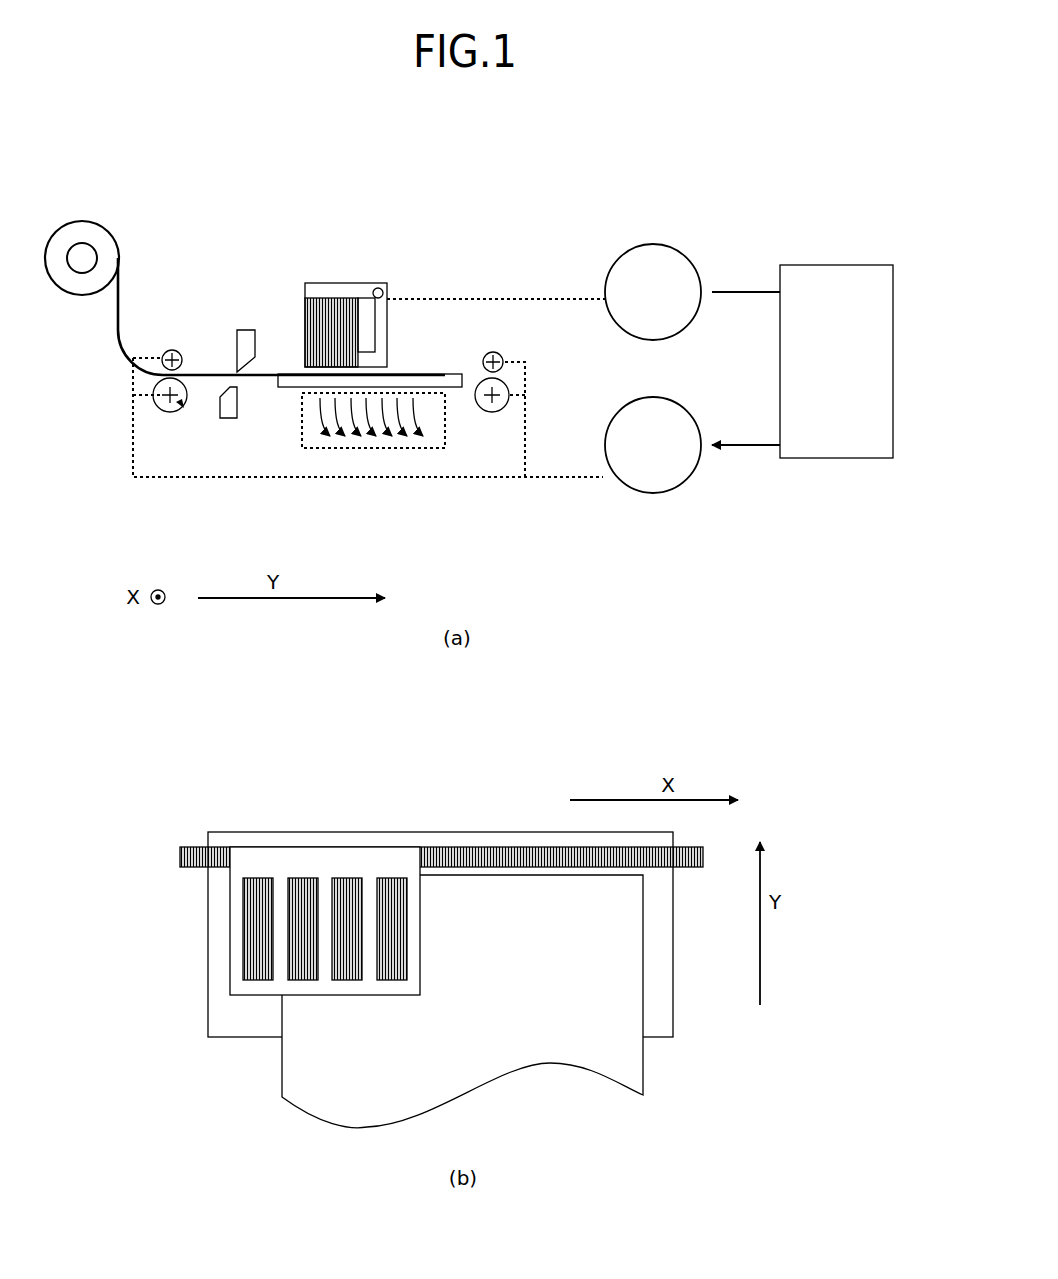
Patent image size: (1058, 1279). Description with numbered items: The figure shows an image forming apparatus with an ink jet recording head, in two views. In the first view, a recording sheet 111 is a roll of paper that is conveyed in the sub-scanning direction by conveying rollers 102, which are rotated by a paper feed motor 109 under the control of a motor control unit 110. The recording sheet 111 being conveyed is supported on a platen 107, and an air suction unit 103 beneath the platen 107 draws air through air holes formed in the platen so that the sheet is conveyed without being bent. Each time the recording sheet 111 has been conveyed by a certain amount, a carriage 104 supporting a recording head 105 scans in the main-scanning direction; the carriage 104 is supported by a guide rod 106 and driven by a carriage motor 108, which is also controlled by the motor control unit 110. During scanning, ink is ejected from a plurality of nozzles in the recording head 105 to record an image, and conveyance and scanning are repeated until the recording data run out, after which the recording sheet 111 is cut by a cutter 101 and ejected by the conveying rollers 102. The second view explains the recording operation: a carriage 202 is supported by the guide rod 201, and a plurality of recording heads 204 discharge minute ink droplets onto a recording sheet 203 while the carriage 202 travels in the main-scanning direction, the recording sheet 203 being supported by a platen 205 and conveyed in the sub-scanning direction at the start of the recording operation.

The cutter 101 is at (232, 375).
The conveying rollers 102 is at (170, 380).
The air suction unit 103 is at (302, 418).
The carriage 104 is at (345, 294).
The recording head 105 is at (305, 310).
The guide rod 106 is at (383, 290).
The platen 107 is at (440, 380).
The carriage motor 108 is at (668, 250).
The paper feed motor 109 is at (675, 488).
The motor control unit 110 is at (812, 265).
The recording sheet 111 is at (110, 237).
The guide rod 201 is at (185, 847).
The carriage 202 is at (280, 875).
The recording sheet 203 is at (292, 1050).
The recording heads 204 is at (392, 893).
The platen 205 is at (263, 832).